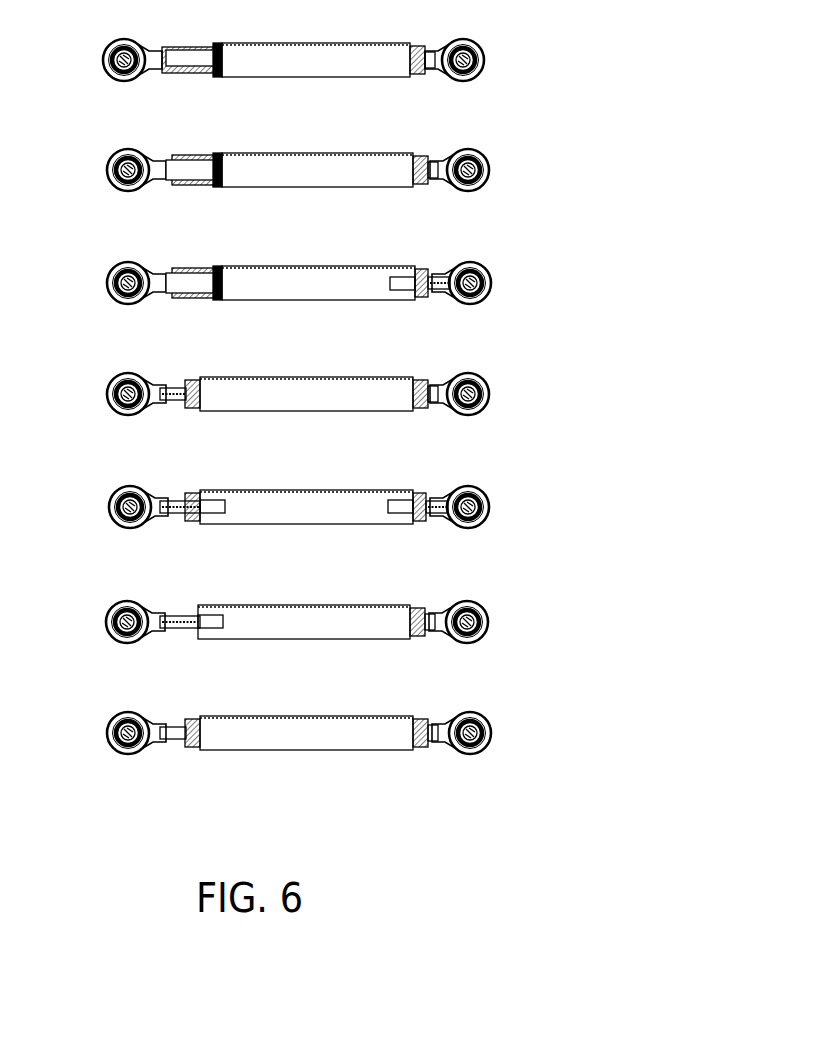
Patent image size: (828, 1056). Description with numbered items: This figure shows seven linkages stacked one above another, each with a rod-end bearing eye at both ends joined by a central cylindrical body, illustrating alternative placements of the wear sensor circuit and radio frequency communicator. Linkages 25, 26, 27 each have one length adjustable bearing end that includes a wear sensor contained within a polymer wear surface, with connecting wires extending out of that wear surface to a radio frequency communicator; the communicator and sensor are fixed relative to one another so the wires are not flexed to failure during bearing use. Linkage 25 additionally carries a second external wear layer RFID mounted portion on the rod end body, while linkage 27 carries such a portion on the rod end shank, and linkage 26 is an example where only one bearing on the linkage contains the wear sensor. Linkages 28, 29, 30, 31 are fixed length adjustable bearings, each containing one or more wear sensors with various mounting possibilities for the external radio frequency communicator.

The linkage 25 is at (67, 70).
The linkage 26 is at (67, 180).
The linkage 27 is at (67, 293).
The linkage 28 is at (67, 404).
The linkage 29 is at (67, 517).
The linkage 30 is at (67, 632).
The linkage 31 is at (67, 743).